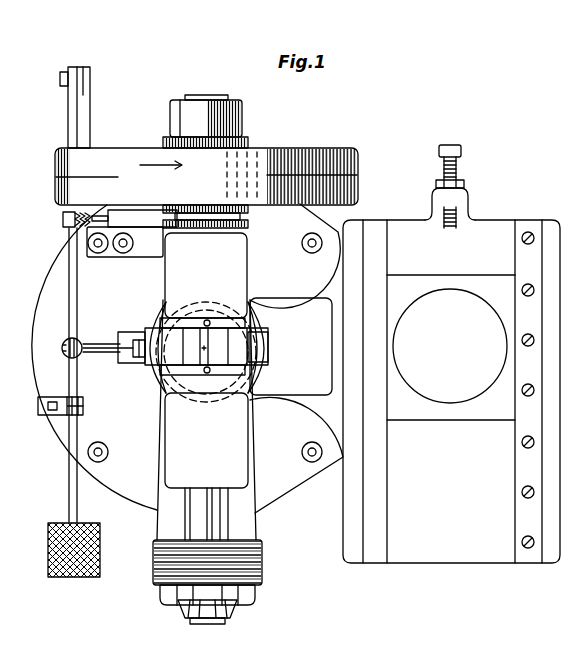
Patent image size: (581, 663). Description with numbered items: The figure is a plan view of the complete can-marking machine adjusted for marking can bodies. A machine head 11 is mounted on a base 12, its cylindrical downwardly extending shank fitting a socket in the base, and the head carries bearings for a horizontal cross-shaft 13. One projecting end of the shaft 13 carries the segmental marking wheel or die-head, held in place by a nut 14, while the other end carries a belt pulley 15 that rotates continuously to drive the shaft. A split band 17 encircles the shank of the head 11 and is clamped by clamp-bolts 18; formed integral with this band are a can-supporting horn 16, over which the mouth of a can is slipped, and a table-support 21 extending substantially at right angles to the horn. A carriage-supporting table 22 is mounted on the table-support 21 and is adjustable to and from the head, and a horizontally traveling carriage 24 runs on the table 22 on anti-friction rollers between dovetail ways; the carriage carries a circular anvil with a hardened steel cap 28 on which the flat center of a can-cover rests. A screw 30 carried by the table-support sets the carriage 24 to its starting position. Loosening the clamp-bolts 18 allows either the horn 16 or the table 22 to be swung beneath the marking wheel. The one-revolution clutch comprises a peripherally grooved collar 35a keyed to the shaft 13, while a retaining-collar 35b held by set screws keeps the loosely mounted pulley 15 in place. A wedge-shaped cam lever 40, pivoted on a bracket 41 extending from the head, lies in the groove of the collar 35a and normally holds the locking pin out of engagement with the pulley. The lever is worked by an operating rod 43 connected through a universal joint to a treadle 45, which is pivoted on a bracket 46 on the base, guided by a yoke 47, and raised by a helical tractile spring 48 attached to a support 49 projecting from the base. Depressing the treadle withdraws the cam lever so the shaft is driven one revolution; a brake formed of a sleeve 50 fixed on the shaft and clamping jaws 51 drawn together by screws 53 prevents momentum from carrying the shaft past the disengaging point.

The machine head 11 is at (206, 386).
The base 12 is at (187, 358).
The cross-shaft 13 is at (204, 97).
The nut 14 is at (228, 606).
The belt pulley 15 is at (206, 176).
The can-supporting horn 16 is at (226, 527).
The band 17 is at (160, 313).
The clamp-bolts 18 is at (158, 378).
The table-support 21 is at (304, 346).
The carriage-supporting table 22 is at (451, 375).
The carriage 24 is at (451, 347).
The cap 28 is at (450, 346).
The screw 30 is at (460, 160).
The collar 35a is at (248, 213).
The retaining-collar 35b is at (243, 118).
The cam lever 40 is at (145, 217).
The bracket 41 is at (125, 243).
The operating rod 43 is at (78, 222).
The treadle 45 is at (73, 288).
The bracket 46 is at (91, 103).
The yoke 47 is at (84, 405).
The tractile spring 48 is at (66, 357).
The support 49 is at (101, 343).
The sleeve 50 is at (190, 326).
The clamping jaws 51 is at (153, 332).
The screws 53 is at (170, 348).